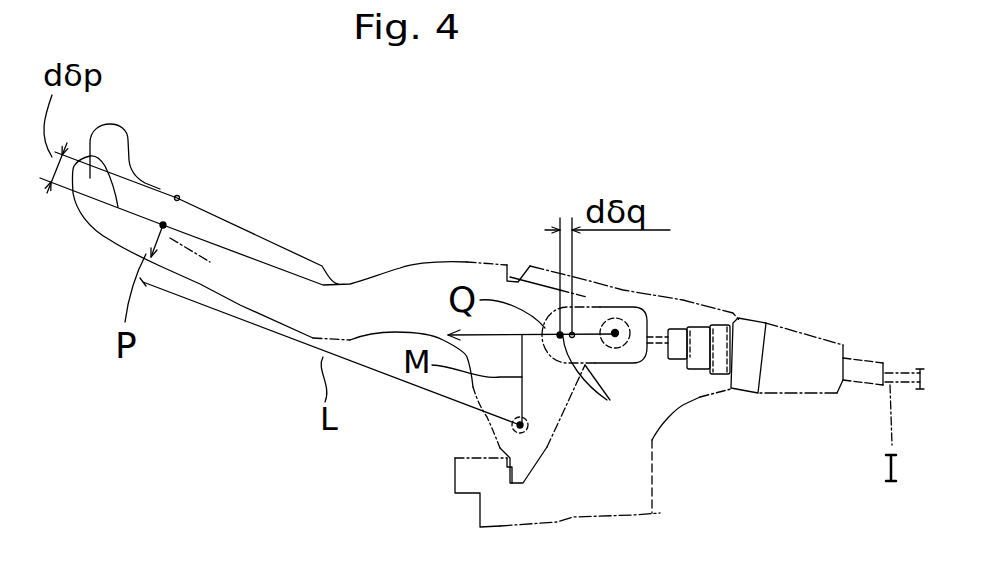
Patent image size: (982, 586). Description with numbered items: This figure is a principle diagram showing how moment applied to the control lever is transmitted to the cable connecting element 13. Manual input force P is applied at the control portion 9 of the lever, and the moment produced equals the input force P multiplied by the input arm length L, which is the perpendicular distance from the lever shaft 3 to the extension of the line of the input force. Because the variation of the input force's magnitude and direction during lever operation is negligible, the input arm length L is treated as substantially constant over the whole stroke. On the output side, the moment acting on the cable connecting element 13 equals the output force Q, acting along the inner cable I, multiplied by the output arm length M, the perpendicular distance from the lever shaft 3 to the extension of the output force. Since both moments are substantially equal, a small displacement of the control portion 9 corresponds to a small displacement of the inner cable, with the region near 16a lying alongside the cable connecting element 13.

The control portion 9 is at (204, 238).
The cable connecting element 13 is at (640, 310).
The lever arm 16a is at (605, 391).
The lever shaft 3 is at (530, 428).